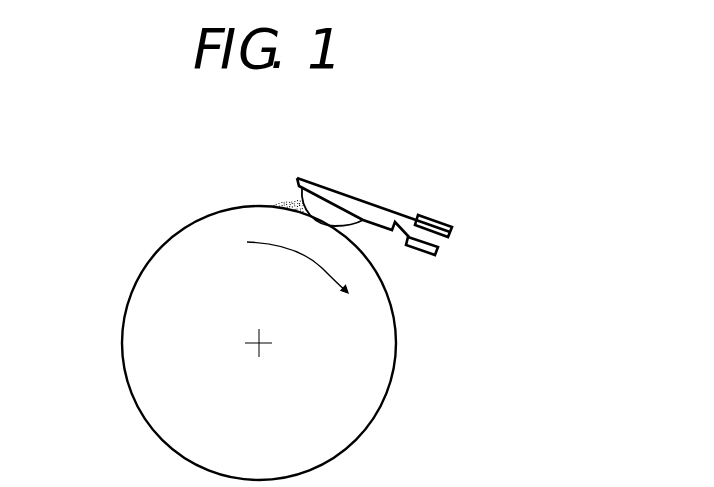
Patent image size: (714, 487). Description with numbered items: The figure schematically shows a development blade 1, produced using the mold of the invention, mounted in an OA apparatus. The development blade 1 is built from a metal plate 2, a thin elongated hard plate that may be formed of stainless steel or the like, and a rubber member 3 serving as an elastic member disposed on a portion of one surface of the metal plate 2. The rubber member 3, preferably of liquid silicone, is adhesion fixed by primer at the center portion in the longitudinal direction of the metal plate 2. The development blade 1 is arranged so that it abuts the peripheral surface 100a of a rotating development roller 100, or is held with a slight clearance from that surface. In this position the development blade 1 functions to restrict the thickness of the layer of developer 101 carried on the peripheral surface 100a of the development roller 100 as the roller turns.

The development blade 1 is at (287, 172).
The metal plate 2 is at (338, 190).
The rubber member 3 is at (304, 194).
The development roller 100 is at (380, 400).
The peripheral surface of the development roller 100a is at (397, 342).
The developer 101 is at (288, 196).